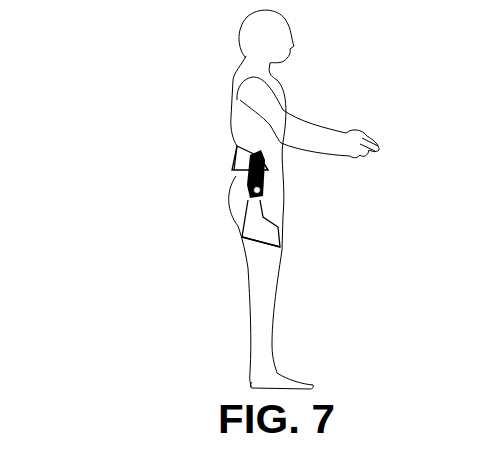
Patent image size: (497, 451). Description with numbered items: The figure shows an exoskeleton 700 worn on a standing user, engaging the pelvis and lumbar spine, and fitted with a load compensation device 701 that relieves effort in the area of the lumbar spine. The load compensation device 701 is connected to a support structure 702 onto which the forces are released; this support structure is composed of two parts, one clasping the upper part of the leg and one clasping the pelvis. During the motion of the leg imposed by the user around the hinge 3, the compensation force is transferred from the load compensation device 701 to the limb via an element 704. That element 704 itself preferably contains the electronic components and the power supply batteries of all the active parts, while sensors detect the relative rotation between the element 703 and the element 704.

The exoskeleton 700 is at (196, 176).
The load compensation device 701 is at (268, 137).
The support structure 702 is at (247, 218).
The element 703 is at (272, 180).
The element 704 is at (263, 235).
The hinge 3 is at (261, 192).